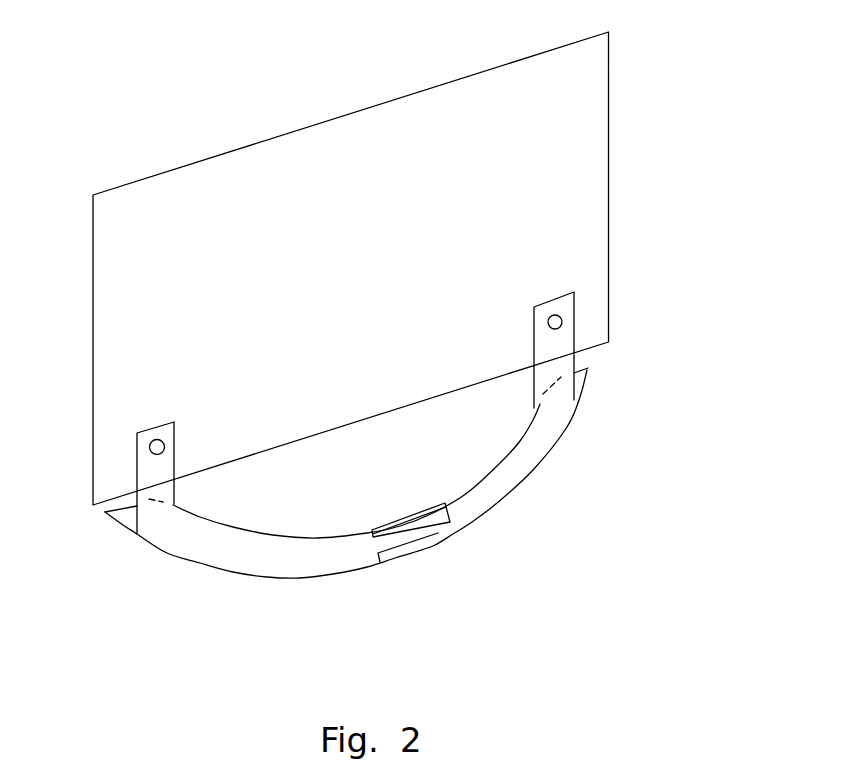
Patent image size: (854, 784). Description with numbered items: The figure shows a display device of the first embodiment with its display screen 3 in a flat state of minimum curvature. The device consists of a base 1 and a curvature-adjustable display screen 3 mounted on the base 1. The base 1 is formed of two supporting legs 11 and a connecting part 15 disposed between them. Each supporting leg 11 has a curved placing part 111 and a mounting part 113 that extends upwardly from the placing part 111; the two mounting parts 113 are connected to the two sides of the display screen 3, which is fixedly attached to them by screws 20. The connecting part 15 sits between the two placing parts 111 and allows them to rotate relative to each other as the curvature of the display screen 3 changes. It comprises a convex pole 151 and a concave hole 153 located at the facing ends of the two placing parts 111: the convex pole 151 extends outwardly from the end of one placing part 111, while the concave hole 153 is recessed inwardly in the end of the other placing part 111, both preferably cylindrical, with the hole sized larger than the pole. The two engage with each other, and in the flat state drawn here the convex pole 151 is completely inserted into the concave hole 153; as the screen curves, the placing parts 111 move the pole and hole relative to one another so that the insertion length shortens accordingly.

The base 1 is at (423, 450).
The display screen 3 is at (283, 203).
The supporting leg 11 is at (423, 462).
The placing part 111 is at (410, 496).
The mounting part 113 is at (153, 477).
The screw 20 is at (563, 320).
The connecting part 15 is at (376, 589).
The convex pole 151 is at (418, 531).
The concave hole 153 is at (447, 525).